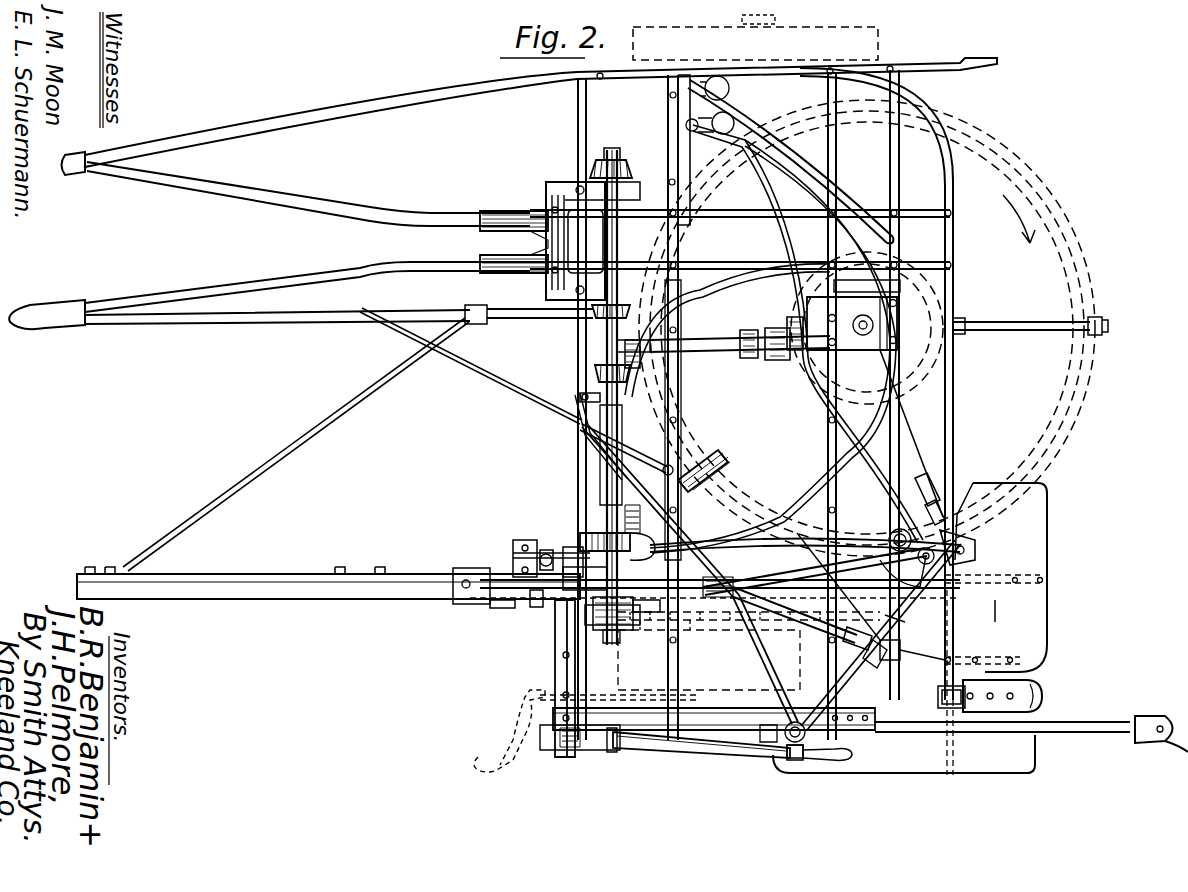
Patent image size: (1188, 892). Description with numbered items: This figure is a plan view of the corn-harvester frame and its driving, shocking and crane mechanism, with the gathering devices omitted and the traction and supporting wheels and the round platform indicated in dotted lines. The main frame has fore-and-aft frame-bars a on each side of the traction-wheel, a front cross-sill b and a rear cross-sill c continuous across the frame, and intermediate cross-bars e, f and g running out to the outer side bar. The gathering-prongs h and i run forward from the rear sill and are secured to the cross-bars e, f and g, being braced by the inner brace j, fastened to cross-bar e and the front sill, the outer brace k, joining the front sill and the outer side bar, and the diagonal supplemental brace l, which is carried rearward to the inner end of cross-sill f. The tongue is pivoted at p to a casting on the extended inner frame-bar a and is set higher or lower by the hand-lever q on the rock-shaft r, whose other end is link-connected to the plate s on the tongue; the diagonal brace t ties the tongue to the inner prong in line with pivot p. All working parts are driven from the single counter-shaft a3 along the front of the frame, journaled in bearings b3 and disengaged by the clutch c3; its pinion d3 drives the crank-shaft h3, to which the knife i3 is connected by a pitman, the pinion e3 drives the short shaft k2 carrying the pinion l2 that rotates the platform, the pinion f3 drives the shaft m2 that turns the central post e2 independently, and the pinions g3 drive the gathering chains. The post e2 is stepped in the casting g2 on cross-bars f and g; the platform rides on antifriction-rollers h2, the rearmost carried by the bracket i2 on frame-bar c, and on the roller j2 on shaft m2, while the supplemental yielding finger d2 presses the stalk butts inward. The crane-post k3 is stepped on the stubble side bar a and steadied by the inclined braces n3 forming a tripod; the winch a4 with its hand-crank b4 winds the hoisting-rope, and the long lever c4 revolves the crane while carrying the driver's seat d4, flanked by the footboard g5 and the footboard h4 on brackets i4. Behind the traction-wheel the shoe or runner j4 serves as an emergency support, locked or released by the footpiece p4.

The fore-and-aft frame-bars a is at (503, 577).
The front cross-sill b is at (580, 470).
The rear cross-sill c is at (957, 401).
The intermediate cross-bar e is at (678, 417).
The intermediate cross-bar f is at (830, 446).
The intermediate cross-bar g is at (893, 423).
The gathering-prong h is at (302, 200).
The gathering-prong i is at (285, 278).
The inner prong-brace j is at (372, 312).
The outer prong-brace k is at (400, 108).
The diagonal supplemental brace l is at (478, 370).
The tongue pivot p is at (467, 603).
The hand-lever q is at (680, 752).
The rock-shaft r is at (558, 658).
The plate s is at (500, 603).
The diagonal tongue brace t is at (290, 448).
The counter-shaft a3 is at (620, 415).
The roller or winch a4 is at (790, 620).
The bearings b3 is at (530, 623).
The hand-crank b4 is at (908, 642).
The clutch c3 is at (593, 610).
The long lever c4 is at (975, 730).
The supplemental yielding finger d2 is at (805, 152).
The pinion d3 is at (677, 577).
The driver's seat d4 is at (1177, 727).
The central post e2 is at (863, 315).
The pinion e3 is at (593, 533).
The pinion f3 is at (600, 372).
The casting g2 is at (800, 360).
The pinions g3 is at (594, 168).
The footboard g5 is at (1017, 767).
The antifriction-rollers h2 is at (625, 455).
The crank-shaft h3 is at (507, 557).
The footboard h4 is at (1047, 620).
The bracket i2 is at (1022, 320).
The knife i3 is at (520, 238).
The brackets i4 is at (1040, 583).
The roller j2 is at (748, 350).
The shoe or runner j4 is at (1043, 700).
The short shaft k2 is at (667, 500).
The crane-post k3 is at (850, 750).
The pinion l2 is at (733, 463).
The shaft m2 is at (707, 350).
The inclined braces n3 is at (677, 722).
The footpiece p4 is at (897, 703).